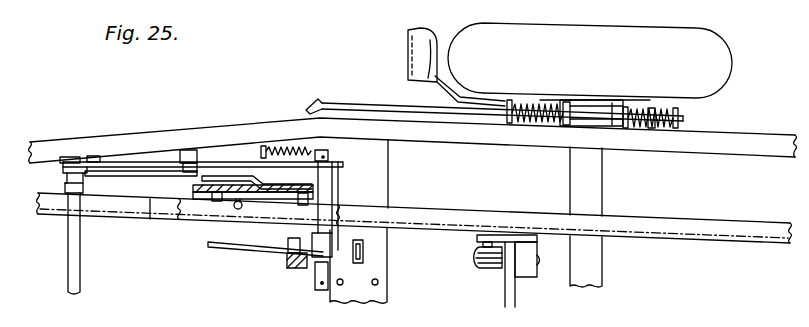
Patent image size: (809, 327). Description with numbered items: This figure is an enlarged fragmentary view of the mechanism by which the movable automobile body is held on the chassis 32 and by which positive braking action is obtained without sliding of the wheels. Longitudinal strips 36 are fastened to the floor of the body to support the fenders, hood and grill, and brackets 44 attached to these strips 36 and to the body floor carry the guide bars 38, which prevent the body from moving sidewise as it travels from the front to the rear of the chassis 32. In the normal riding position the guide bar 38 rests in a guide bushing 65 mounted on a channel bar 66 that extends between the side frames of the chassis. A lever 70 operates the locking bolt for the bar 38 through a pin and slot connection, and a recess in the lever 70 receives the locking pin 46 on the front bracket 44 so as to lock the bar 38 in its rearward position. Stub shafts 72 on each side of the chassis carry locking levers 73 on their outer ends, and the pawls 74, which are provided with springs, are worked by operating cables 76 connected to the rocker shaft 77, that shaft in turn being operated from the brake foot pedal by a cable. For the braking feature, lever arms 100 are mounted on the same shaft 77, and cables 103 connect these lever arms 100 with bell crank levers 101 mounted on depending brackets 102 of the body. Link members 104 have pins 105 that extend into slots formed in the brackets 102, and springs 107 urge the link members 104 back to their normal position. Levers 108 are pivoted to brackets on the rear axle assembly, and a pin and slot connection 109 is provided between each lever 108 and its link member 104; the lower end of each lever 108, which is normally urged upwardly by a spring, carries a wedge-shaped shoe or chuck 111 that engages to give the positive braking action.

The chassis 32 is at (62, 140).
The longitudinal strips 36 is at (102, 210).
The guide bars 38 is at (480, 268).
The brackets 44 is at (525, 272).
The locking pins 46 is at (283, 242).
The guide bushings 65 is at (370, 267).
The channel bar 66 is at (380, 160).
The lever 70 is at (225, 247).
The stub shafts 72 is at (326, 192).
The locking levers 73 is at (203, 184).
The pawls 74 is at (190, 160).
The operating cables 76 is at (130, 162).
The rocker shaft 77 is at (66, 267).
The lever arms 100 is at (66, 186).
The bell crank levers 101 is at (263, 146).
The depending brackets 102 is at (274, 184).
The cables 103 is at (152, 220).
The link members 104 is at (334, 103).
The pins 105 is at (207, 193).
The springs 107 is at (531, 84).
The levers 108 is at (455, 88).
The pin and slot connection 109 is at (603, 103).
The wedge-shaped shoe or chuck 111 is at (410, 44).